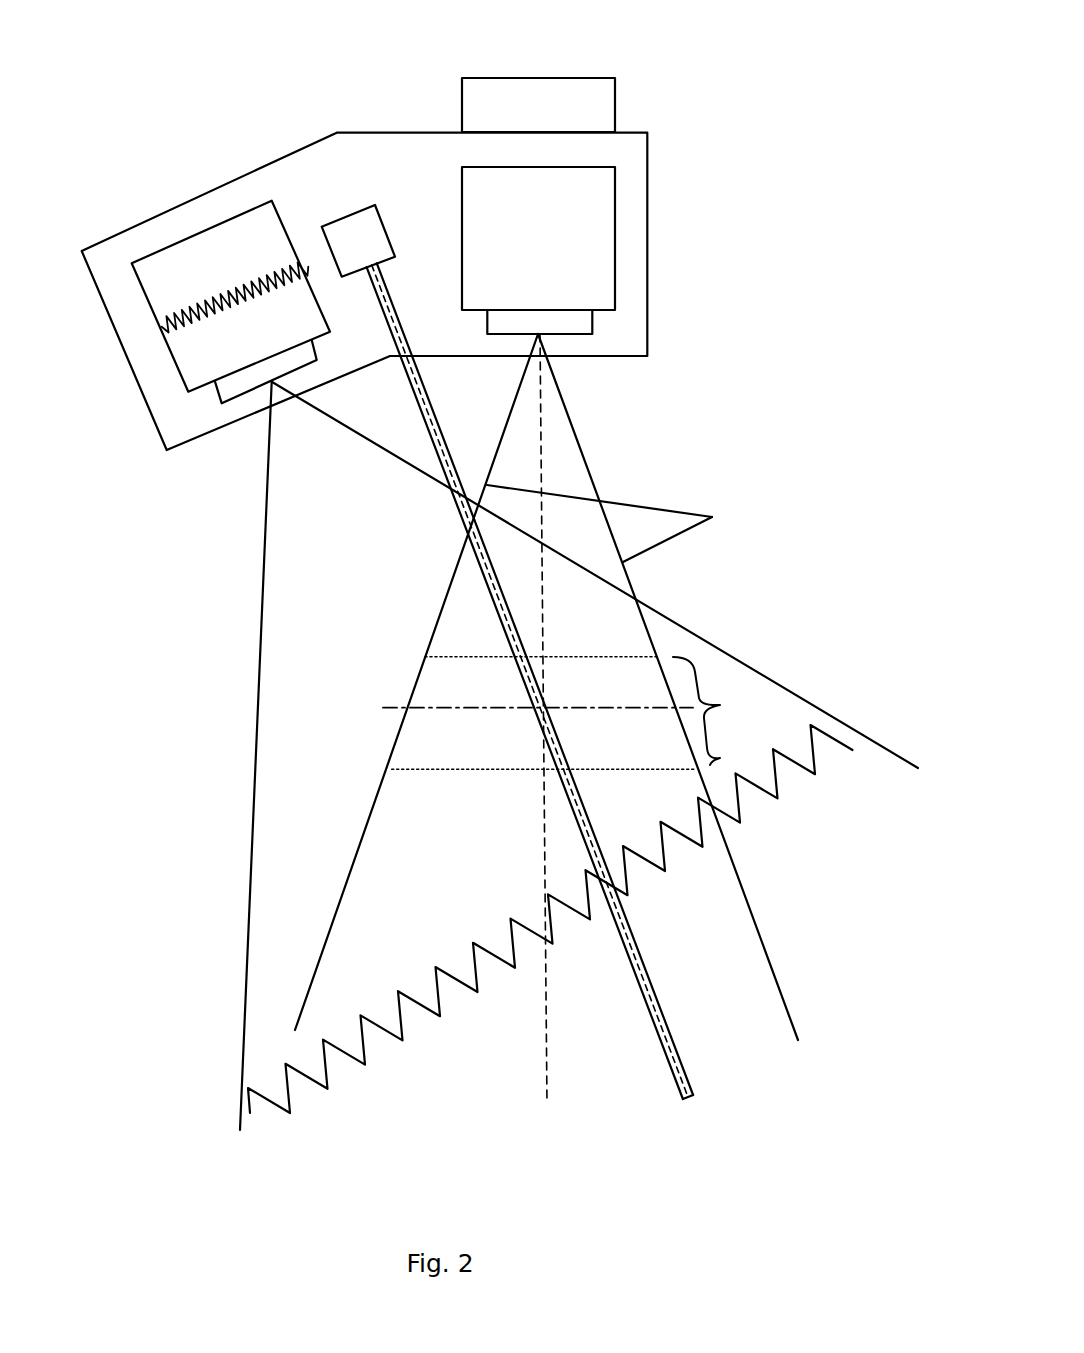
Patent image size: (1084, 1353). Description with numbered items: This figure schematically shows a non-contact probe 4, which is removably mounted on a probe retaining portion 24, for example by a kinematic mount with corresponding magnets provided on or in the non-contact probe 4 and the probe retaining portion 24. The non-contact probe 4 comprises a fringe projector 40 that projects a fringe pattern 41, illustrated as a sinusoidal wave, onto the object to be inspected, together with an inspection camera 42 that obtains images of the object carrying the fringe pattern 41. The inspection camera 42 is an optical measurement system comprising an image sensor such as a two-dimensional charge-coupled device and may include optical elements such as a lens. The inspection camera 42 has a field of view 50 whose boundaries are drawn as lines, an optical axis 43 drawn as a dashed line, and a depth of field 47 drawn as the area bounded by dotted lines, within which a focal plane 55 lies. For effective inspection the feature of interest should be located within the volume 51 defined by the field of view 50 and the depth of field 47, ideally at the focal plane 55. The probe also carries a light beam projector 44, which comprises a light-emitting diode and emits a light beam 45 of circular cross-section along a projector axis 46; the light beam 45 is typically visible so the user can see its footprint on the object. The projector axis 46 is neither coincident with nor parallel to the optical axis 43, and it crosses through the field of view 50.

The non-contact probe 4 is at (145, 112).
The probe retaining portion 24 is at (609, 101).
The fringe projector 40 is at (175, 275).
The fringe pattern 41 is at (222, 1124).
The inspection camera 42 is at (588, 225).
The optical axis 43 is at (542, 467).
The light beam projector 44 is at (363, 217).
The light beam 45 is at (442, 432).
The projector axis 46 is at (422, 412).
The depth of field 47 is at (716, 711).
The field of view 50 is at (546, 687).
The volume 51 is at (412, 746).
The focal plane 55 is at (517, 707).